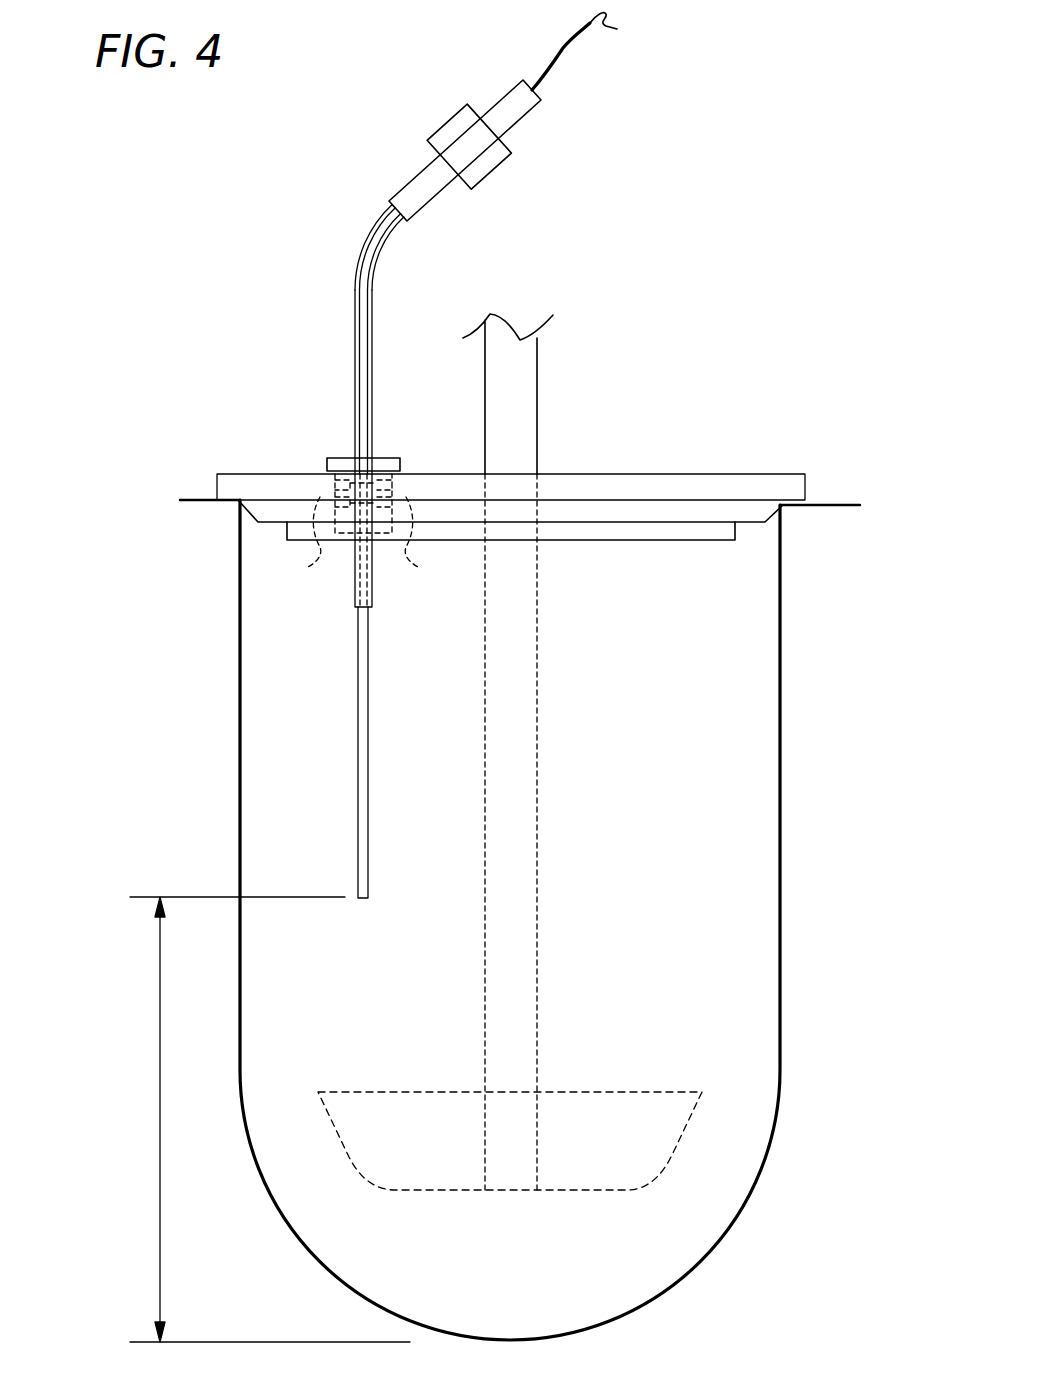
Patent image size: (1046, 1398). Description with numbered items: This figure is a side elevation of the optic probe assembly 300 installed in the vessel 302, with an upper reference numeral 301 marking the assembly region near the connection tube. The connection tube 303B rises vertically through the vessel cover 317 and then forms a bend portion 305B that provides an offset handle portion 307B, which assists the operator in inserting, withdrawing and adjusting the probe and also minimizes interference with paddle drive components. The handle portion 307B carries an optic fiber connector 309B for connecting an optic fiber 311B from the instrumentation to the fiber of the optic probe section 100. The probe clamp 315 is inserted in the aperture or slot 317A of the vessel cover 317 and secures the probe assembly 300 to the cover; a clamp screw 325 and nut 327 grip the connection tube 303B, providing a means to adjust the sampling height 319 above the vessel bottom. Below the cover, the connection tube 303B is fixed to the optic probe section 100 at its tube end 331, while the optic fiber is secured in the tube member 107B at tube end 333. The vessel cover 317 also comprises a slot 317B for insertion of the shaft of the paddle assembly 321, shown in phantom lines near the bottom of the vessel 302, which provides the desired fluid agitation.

The optic probe section 100 is at (276, 752).
The tube member 107B is at (358, 695).
The optic probe assembly 300 is at (275, 205).
The probe assembly 301 is at (431, 310).
The vessel 302 is at (780, 977).
The connection tube 303B is at (352, 297).
The bend portion 305B is at (375, 255).
The handle portion 307B is at (538, 170).
The optic fiber connector 309B is at (448, 117).
The optic fiber 311B is at (565, 51).
The probe clamp 315 is at (392, 457).
The vessel cover 317 is at (770, 474).
The aperture or slot 317A is at (328, 490).
The slot 317B is at (550, 493).
The sampling height 319 is at (270, 1119).
The paddle assembly 321 is at (667, 1160).
The clamp screw 325 is at (285, 540).
The nut 327 is at (440, 540).
The tube end 331 is at (370, 609).
The tube end 333 is at (373, 313).